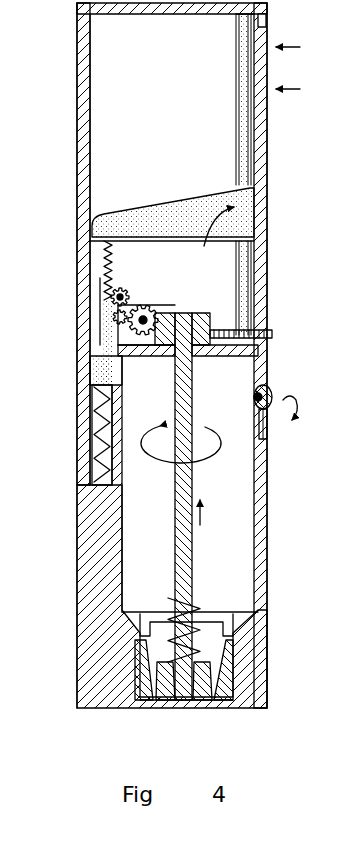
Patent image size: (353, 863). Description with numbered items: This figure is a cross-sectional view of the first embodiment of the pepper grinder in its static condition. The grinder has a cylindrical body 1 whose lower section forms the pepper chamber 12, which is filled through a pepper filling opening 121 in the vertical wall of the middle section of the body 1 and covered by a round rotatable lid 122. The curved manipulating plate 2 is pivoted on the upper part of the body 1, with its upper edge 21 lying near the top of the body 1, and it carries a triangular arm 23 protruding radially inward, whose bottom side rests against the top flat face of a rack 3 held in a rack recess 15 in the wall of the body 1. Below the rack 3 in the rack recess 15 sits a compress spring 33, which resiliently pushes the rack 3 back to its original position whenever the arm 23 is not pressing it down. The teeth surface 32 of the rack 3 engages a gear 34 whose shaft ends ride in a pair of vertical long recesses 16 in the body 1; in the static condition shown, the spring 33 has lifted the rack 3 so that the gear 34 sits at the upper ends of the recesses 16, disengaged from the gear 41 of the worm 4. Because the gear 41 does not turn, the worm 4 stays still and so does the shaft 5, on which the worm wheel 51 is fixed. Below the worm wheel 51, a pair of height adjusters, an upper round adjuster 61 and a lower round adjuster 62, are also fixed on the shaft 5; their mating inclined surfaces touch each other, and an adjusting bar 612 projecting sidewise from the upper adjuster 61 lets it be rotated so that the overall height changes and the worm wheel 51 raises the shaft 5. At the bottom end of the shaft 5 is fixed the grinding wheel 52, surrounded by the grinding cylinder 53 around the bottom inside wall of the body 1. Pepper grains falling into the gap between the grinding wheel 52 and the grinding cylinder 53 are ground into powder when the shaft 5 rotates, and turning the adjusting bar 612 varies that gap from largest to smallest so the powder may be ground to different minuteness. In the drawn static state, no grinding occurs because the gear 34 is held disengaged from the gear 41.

The body 1 is at (147, 355).
The manipulating plate 2 is at (278, 174).
The rack 3 is at (140, 313).
The worm 4 is at (158, 305).
The shaft 5 is at (193, 571).
The pepper chamber 12 is at (237, 520).
The rack recess 15 is at (97, 406).
The long recesses 16 is at (134, 303).
The tube opening 21 is at (254, 32).
The triangular arm 23 is at (157, 222).
The teeth surface 32 is at (112, 267).
The compress spring 33 is at (97, 448).
The gear 34 is at (110, 300).
The gear 41 is at (135, 357).
The worm wheel 51 is at (201, 313).
The grinding wheel 52 is at (165, 702).
The grinding cylinder 53 is at (216, 702).
The upper round adjuster 61 is at (212, 357).
The lower round adjuster 62 is at (160, 357).
The pepper filling opening 121 is at (268, 431).
The round rotatable lid 122 is at (272, 390).
The adjusting bar 612 is at (272, 331).